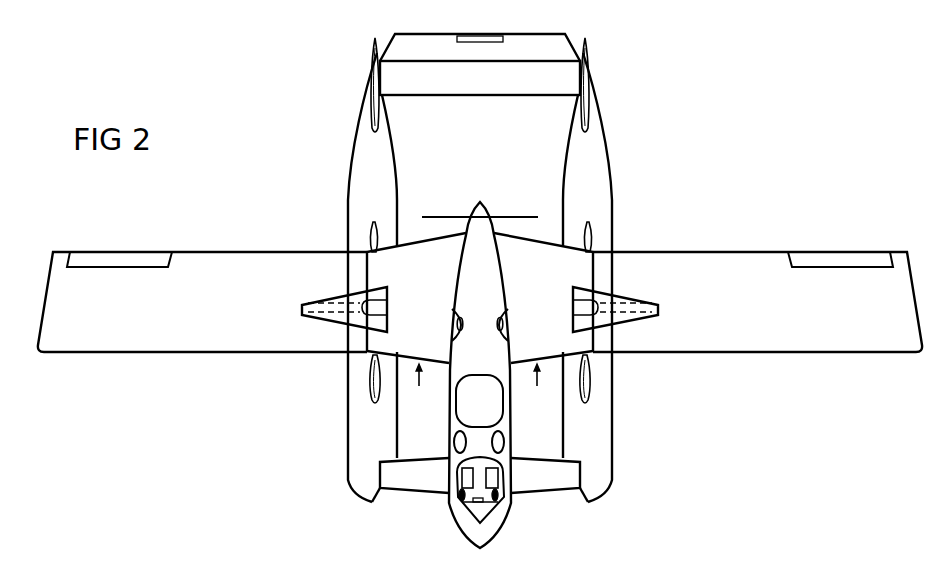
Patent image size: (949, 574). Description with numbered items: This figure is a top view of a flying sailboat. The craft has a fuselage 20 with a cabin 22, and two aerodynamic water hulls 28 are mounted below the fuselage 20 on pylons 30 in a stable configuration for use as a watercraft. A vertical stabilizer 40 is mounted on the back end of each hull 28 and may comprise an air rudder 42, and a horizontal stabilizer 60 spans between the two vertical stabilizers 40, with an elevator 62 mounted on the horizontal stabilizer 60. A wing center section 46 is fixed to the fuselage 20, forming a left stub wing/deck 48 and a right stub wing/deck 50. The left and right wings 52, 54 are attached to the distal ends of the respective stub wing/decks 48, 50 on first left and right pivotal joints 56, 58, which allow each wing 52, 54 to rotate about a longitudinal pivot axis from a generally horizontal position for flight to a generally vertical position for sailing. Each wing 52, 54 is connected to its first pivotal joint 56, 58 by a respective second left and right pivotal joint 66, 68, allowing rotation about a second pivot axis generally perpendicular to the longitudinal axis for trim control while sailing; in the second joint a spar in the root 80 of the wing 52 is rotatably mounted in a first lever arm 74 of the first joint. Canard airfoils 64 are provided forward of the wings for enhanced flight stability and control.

The fuselage 20 is at (469, 300).
The cabin 22 is at (478, 513).
The aerodynamic water hull 28 is at (365, 205).
The pylon 30 is at (363, 380).
The vertical stabilizer 40 is at (372, 110).
The air rudder 42 is at (376, 50).
The wing center section 46 is at (478, 386).
The left stub wing/deck 48 is at (524, 320).
The right stub wing/deck 50 is at (411, 320).
The left wing 52 is at (764, 329).
The right wing 54 is at (164, 329).
The first left pivotal joint 56 is at (597, 332).
The first right pivotal joint 58 is at (377, 322).
The horizontal stabilizer 60 is at (500, 78).
The elevator 62 is at (427, 50).
The canard airfoil 64 is at (411, 489).
The second left pivotal joint 66 is at (643, 322).
The second right pivotal joint 68 is at (330, 305).
The first lever arm 74 is at (615, 302).
The root 80 is at (345, 270).